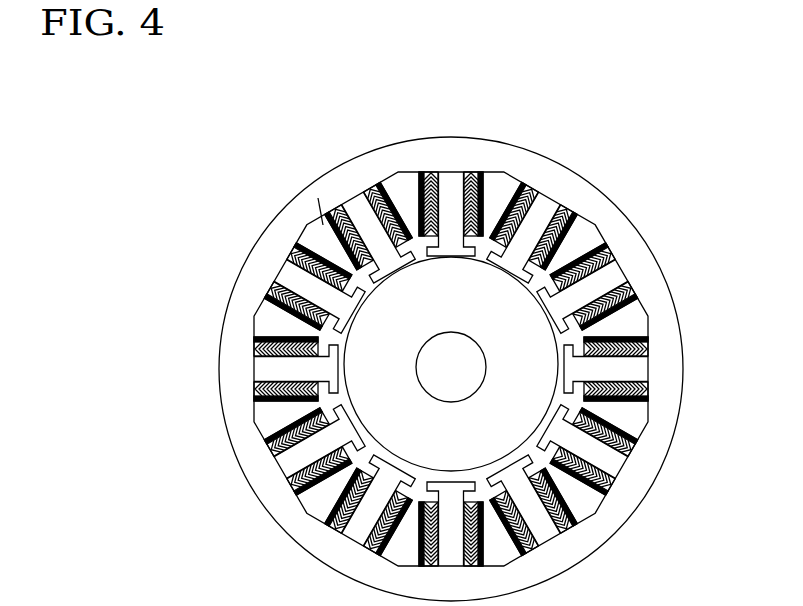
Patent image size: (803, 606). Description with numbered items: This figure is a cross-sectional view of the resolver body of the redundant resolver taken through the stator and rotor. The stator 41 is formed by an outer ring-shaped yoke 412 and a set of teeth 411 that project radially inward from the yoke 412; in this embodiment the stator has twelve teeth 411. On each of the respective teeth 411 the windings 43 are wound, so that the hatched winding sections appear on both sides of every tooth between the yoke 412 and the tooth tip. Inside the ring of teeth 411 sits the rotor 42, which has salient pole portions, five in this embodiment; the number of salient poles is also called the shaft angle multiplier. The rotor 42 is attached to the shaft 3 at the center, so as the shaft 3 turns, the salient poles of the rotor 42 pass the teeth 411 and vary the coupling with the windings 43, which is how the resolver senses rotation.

The stator 41 is at (394, 96).
The teeth 411 is at (358, 215).
The yoke 412 is at (392, 162).
The rotor 42 is at (387, 319).
The windings 43 is at (320, 205).
The shaft 3 is at (463, 332).